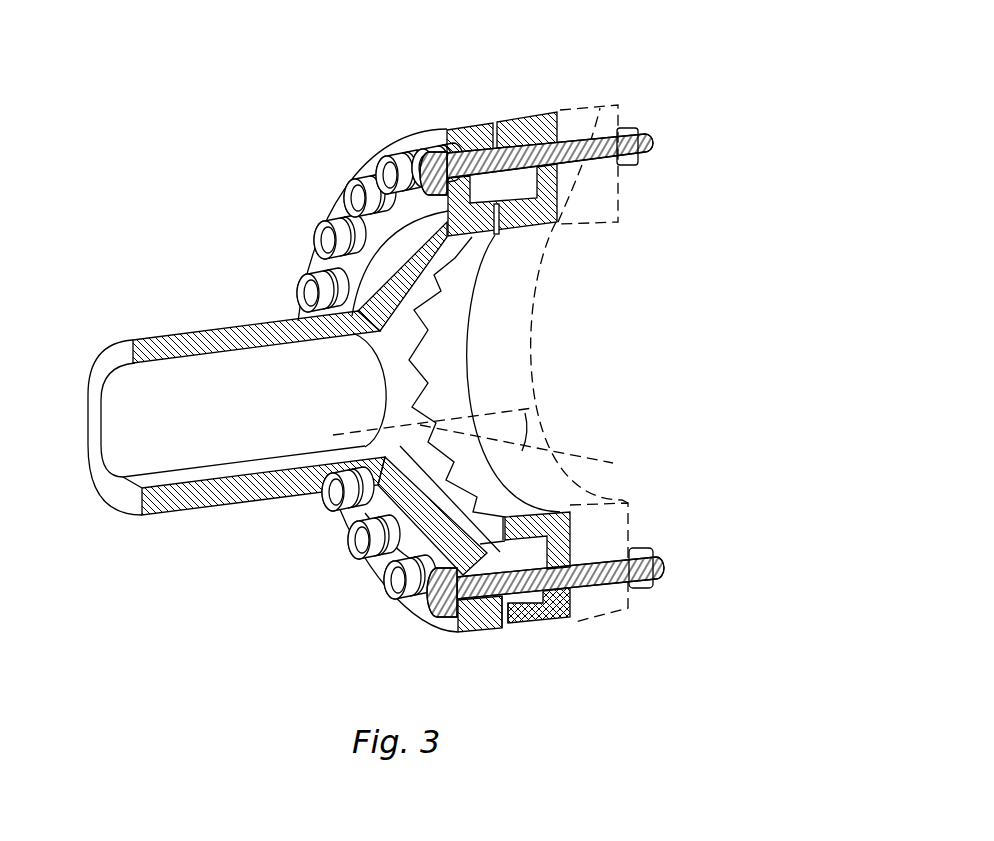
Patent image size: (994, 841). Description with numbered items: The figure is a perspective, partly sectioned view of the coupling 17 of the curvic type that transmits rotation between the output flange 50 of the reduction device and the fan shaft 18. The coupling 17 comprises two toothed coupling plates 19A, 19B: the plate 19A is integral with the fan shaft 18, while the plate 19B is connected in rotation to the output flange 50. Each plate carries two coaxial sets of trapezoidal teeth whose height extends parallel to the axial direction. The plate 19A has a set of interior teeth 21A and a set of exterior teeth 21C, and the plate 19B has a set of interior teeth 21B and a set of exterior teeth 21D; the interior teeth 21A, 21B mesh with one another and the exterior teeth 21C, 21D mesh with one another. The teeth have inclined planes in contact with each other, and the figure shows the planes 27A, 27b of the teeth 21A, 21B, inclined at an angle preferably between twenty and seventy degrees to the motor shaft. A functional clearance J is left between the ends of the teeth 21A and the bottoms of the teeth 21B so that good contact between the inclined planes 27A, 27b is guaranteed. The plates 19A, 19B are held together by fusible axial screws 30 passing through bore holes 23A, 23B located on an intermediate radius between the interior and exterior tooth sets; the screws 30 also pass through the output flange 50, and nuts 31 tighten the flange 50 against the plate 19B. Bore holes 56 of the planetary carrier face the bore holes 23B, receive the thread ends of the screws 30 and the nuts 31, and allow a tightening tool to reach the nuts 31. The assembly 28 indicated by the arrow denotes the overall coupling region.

The fan shaft 18 is at (180, 502).
The inclined plane of the interior teeth 21A 27A is at (408, 340).
The inclined plane of the interior teeth 21B 27b is at (400, 350).
The interior teeth 21A is at (440, 468).
The interior teeth 21B is at (430, 407).
The functional clearance J is at (427, 365).
The clamp assembly 28, 28' 28 is at (709, 160).
The fusible axial screw 30 is at (533, 165).
The bore hole of the planetary carrier 56 is at (588, 165).
The output flange 50 is at (593, 122).
The nut 31 is at (643, 103).
The bore hole 23A is at (460, 630).
The bore hole 23B is at (570, 600).
The toothed coupling plate 19B is at (547, 623).
The toothed coupling plate 19A is at (470, 633).
The exterior teeth 21D is at (527, 623).
The exterior teeth 21C is at (493, 627).
The coupling 17 is at (512, 640).